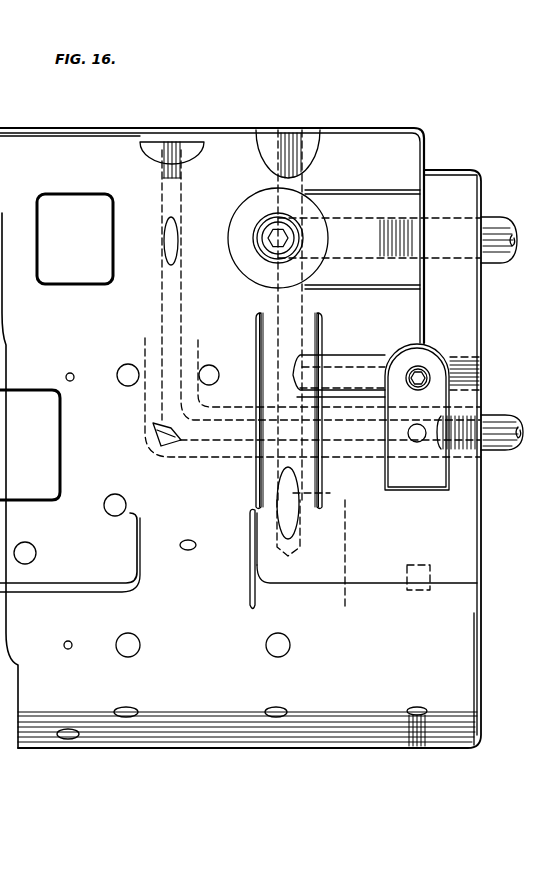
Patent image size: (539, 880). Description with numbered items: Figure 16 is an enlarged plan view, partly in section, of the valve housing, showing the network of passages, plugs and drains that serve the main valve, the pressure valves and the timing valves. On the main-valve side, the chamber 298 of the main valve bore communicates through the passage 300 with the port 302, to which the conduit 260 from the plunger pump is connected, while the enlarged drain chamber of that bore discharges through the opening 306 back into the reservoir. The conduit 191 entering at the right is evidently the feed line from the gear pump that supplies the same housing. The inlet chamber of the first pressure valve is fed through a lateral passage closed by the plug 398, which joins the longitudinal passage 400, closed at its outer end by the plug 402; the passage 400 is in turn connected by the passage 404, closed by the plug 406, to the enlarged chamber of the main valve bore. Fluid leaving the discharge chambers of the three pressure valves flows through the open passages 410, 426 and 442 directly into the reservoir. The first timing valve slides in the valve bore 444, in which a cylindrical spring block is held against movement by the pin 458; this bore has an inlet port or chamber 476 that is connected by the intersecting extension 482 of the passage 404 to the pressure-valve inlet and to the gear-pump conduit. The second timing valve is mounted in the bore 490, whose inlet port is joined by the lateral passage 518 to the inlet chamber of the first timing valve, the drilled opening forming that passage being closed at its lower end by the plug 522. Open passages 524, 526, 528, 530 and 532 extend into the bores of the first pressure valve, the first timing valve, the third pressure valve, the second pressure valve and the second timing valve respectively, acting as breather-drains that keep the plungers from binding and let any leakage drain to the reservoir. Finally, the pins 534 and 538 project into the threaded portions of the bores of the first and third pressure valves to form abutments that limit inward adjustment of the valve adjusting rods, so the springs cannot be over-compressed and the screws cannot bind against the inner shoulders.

The shaft 191 is at (496, 222).
The conduit 260 is at (491, 452).
The chamber 298 is at (175, 238).
The passage 300 is at (162, 190).
The port 302 is at (200, 432).
The opening 306 is at (66, 205).
The plug 398 is at (421, 372).
The longitudinal passage 400 is at (356, 368).
The plug 402 is at (483, 367).
The passage 404 is at (303, 301).
The plug 406 is at (304, 133).
The open passage 410 is at (210, 371).
The open passage 426 is at (288, 708).
The open passage 442 is at (290, 645).
The valve bore 444 is at (538, 507).
The pin 458 is at (31, 550).
The inlet port or chamber 476 is at (331, 494).
The intersecting extension 482 is at (272, 468).
The bore 490 is at (536, 634).
The lateral passage 518 is at (420, 563).
The plug 522 is at (421, 707).
The open passage 524 is at (128, 364).
The open passage 526 is at (115, 494).
The open passage 528 is at (140, 643).
The open passage 530 is at (140, 708).
The open passage 532 is at (76, 730).
The pin 534 is at (73, 372).
The pin 538 is at (72, 640).